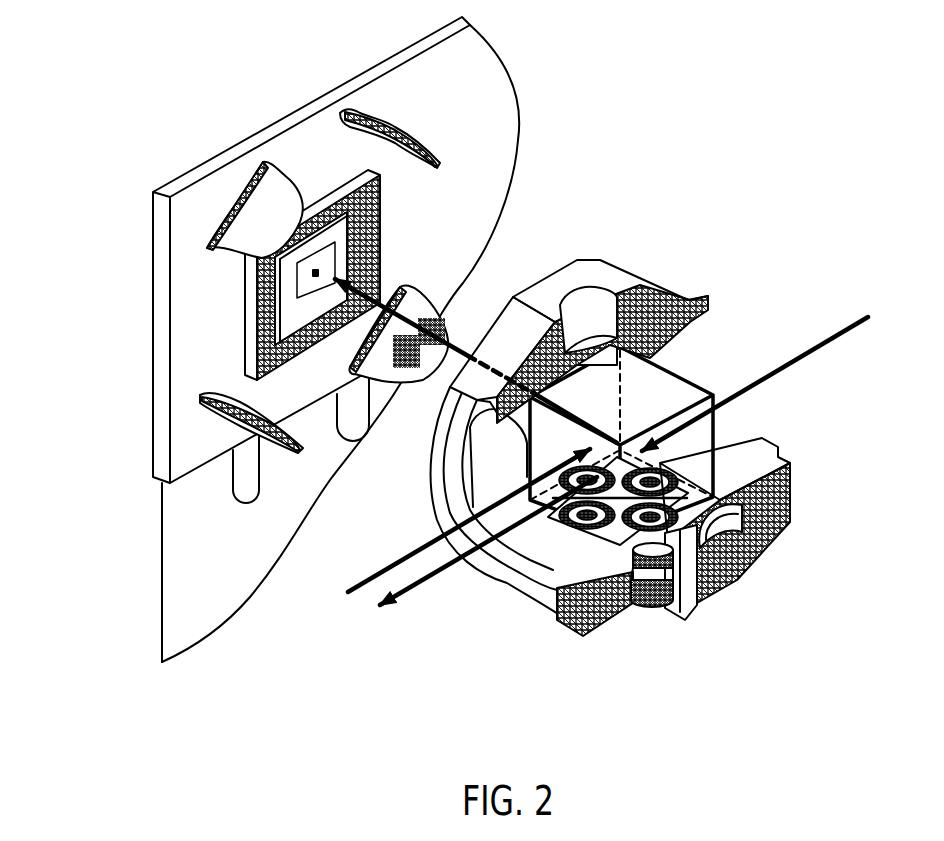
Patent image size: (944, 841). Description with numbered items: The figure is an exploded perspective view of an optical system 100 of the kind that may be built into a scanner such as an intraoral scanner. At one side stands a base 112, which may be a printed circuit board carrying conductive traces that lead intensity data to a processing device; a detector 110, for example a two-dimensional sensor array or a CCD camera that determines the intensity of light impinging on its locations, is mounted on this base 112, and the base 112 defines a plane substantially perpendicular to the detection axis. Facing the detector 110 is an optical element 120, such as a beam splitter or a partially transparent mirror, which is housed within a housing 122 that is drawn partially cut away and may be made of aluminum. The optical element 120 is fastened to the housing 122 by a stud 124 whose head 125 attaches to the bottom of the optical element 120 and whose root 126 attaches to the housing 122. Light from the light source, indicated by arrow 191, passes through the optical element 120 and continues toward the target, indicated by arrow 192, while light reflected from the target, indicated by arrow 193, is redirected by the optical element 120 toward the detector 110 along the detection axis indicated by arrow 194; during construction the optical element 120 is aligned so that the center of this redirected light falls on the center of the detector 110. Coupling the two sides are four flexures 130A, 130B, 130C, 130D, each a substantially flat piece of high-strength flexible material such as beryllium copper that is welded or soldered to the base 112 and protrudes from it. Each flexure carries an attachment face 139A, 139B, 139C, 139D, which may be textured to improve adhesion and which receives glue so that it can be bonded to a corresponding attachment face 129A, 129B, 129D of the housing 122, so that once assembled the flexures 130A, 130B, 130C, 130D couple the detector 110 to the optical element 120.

The optical system 100 is at (660, 76).
The detector 110 is at (283, 296).
The base 112 is at (182, 232).
The optical element 120 is at (702, 440).
The housing 122 is at (780, 502).
The stud 124 is at (693, 587).
The head 125 is at (753, 563).
The root 126 is at (650, 580).
The attachment face 129A is at (517, 323).
The attachment face 129B is at (630, 280).
The attachment face 129D is at (531, 608).
The flexure 130A is at (257, 186).
The flexure 130B is at (375, 112).
The flexure 130C is at (420, 292).
The flexure 130D is at (205, 398).
The attachment face 139A is at (303, 193).
The attachment face 139B is at (398, 163).
The attachment face 139C is at (431, 370).
The attachment face 139D is at (289, 435).
The arrow indicating light from light source 191 is at (857, 318).
The arrow indicating light toward target 192 is at (425, 585).
The arrow indicating light reflected from target 193 is at (388, 568).
The arrow indicating detection axis 194 is at (470, 357).